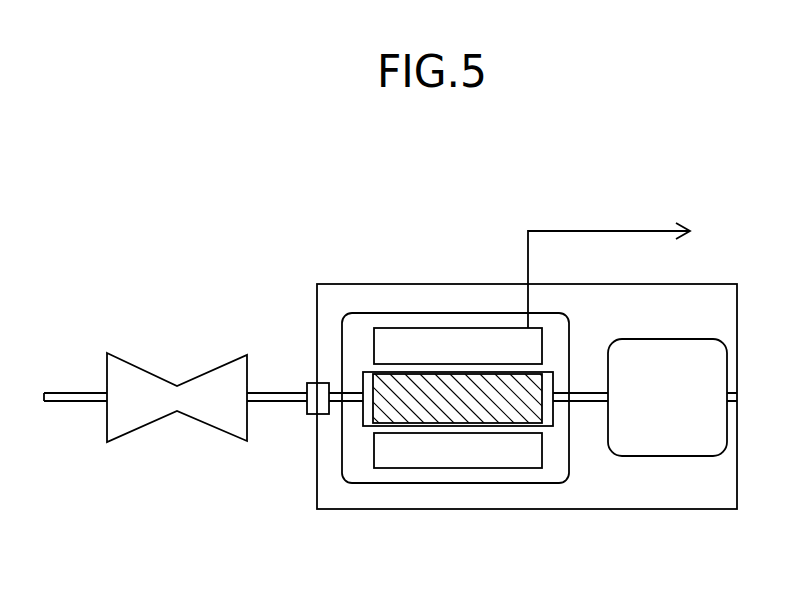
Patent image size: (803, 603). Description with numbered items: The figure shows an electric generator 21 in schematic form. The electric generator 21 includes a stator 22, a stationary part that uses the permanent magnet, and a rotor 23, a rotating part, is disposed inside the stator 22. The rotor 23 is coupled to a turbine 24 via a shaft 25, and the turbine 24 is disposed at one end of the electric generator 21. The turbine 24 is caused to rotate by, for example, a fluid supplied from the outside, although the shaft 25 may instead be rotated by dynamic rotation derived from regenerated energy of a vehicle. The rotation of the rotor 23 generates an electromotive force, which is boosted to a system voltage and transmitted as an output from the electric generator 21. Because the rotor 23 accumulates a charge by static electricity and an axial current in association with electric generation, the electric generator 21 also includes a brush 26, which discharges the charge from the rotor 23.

The electric generator 21 is at (362, 283).
The stator 22 is at (428, 459).
The rotor 23 is at (471, 415).
The turbine 24 is at (218, 365).
The shaft 25 is at (284, 405).
The brush 26 is at (657, 442).